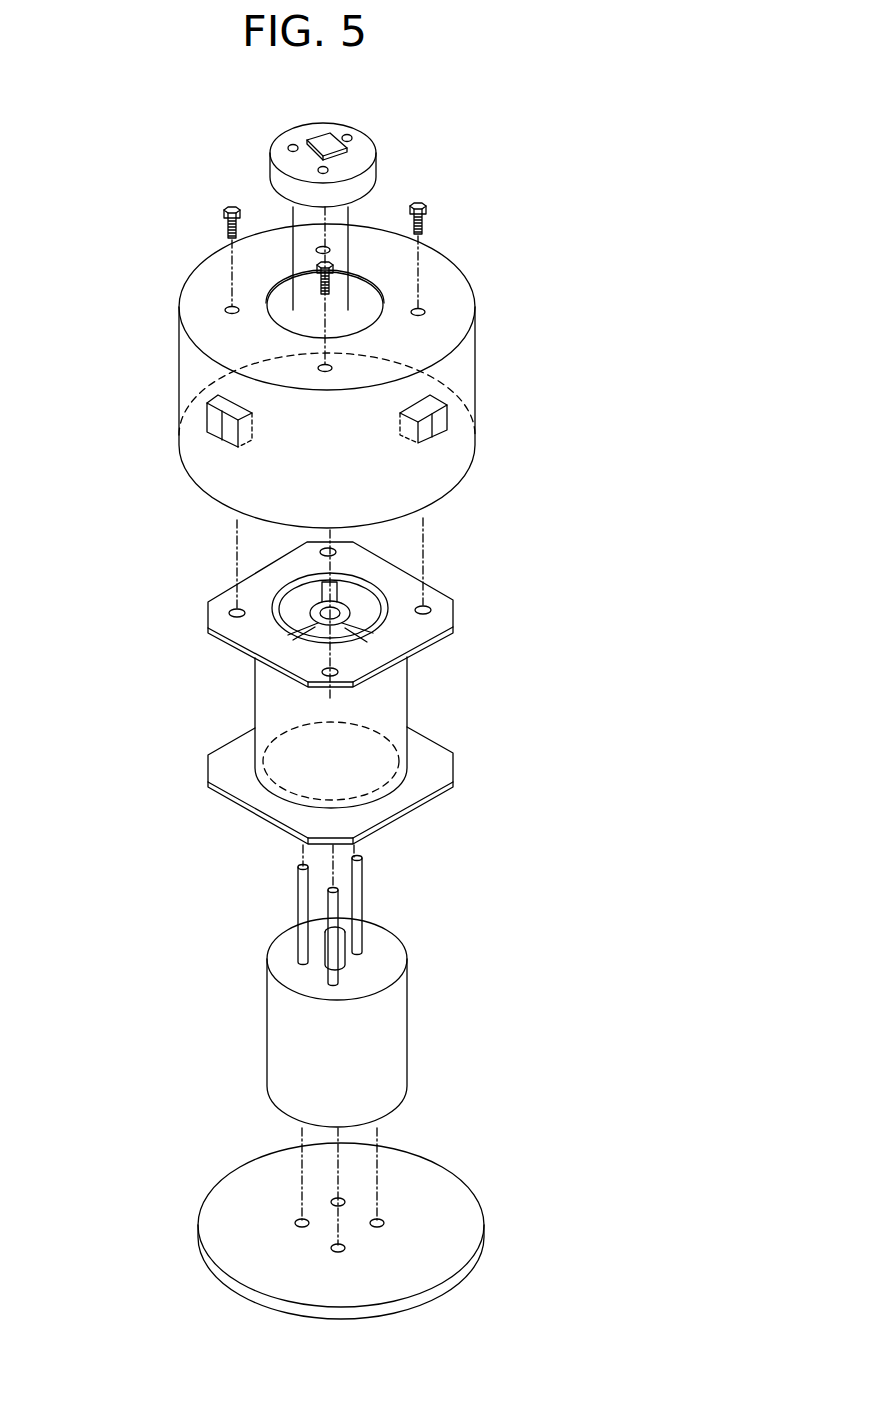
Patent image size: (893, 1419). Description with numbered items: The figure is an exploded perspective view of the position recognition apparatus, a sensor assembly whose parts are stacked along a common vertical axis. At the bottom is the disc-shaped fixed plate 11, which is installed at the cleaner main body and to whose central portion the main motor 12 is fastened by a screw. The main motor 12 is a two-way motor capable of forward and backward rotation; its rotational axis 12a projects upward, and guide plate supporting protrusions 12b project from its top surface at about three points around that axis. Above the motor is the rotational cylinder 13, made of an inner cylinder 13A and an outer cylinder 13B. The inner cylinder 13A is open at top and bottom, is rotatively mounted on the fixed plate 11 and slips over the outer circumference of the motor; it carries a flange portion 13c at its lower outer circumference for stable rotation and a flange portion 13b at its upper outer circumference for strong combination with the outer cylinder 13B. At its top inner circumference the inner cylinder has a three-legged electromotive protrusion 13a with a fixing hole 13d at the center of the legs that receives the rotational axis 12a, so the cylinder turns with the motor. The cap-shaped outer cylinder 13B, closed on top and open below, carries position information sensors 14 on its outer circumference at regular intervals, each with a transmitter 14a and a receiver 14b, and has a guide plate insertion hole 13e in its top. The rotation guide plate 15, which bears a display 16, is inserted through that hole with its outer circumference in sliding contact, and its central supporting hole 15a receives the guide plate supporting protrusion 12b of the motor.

The fixed plate 11 is at (207, 1207).
The main motor 12 is at (323, 992).
The rotational axis 12a is at (343, 947).
The guide plate supporting protrusion 12b is at (352, 873).
The rotational cylinder 13 is at (80, 525).
The inner cylinder 13A is at (257, 680).
The outer cylinder 13B is at (319, 390).
The electromotive protrusion 13a is at (358, 627).
The flange portion 13b is at (370, 629).
The flange portion 13c is at (442, 767).
The fixing hole 13d is at (351, 622).
The guide plate insertion hole 13e is at (357, 318).
The position information sensor 14 is at (343, 443).
The transmitter 14a is at (425, 430).
The receiver 14b is at (438, 422).
The rotation guide plate 15 is at (306, 143).
The supporting hole 15a is at (297, 146).
The display 16 is at (310, 152).